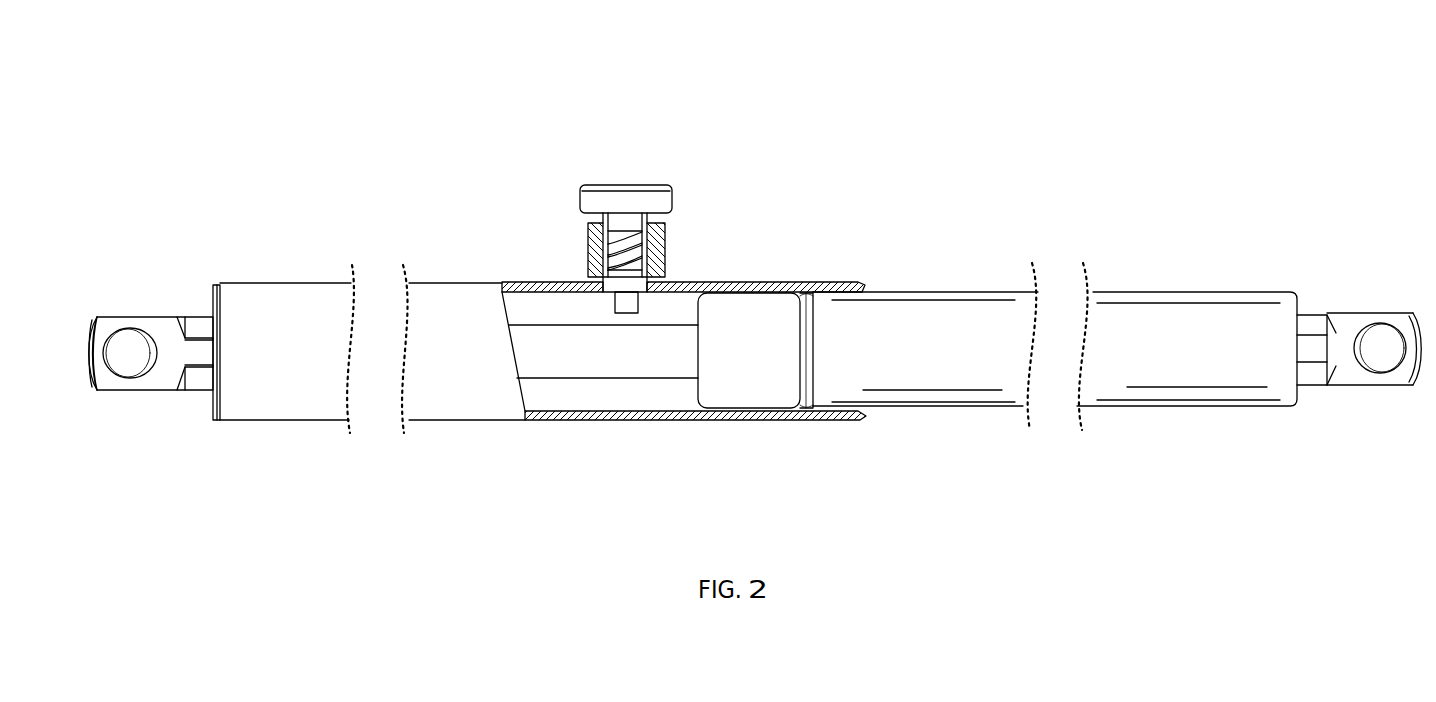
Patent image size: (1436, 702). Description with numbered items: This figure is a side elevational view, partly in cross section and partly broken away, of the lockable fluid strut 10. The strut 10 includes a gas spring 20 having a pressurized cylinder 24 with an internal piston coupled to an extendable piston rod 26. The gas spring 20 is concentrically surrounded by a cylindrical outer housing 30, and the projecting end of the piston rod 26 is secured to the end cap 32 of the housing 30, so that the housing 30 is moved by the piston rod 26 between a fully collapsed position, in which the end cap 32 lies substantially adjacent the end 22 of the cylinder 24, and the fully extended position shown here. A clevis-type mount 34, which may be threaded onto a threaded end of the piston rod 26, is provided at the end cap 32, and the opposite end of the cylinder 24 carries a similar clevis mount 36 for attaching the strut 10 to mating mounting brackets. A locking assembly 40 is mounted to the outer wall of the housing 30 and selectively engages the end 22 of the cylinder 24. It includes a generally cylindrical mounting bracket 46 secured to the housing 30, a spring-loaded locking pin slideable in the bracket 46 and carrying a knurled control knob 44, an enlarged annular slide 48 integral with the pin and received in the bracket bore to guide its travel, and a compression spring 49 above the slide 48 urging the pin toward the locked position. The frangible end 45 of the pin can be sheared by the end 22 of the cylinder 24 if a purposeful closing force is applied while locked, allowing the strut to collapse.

The fluid strut 10 is at (628, 123).
The gas spring 20 is at (945, 284).
The end of gas spring cylinder 22 is at (688, 282).
The gas spring cylinder 24 is at (947, 407).
The piston rod 26 is at (605, 380).
The outer housing 30 is at (553, 421).
The end cap 32 is at (208, 408).
The clevis-type mount 34 is at (147, 317).
The clevis mount 36 is at (1357, 313).
The locking assembly 40 is at (690, 207).
The control knob 44 is at (580, 200).
The end of locking pin 45 is at (614, 303).
The mounting bracket 46 is at (588, 250).
The annular slide 48 is at (634, 281).
The compression spring 49 is at (630, 230).